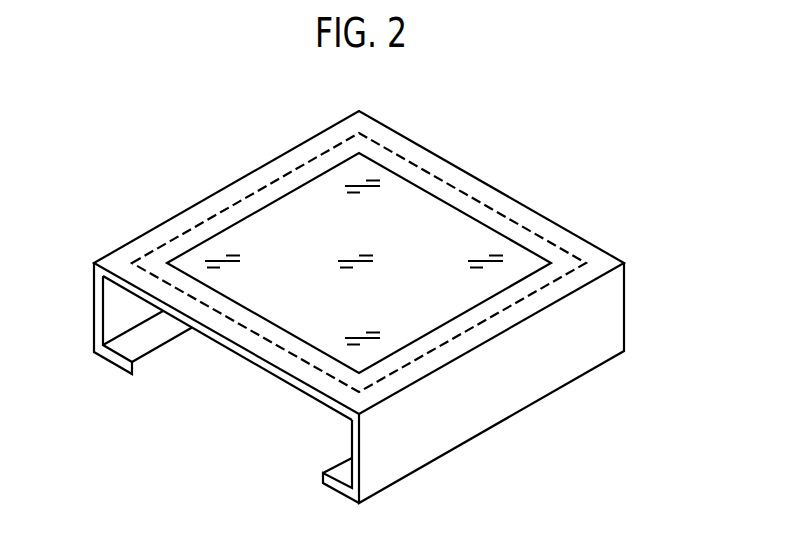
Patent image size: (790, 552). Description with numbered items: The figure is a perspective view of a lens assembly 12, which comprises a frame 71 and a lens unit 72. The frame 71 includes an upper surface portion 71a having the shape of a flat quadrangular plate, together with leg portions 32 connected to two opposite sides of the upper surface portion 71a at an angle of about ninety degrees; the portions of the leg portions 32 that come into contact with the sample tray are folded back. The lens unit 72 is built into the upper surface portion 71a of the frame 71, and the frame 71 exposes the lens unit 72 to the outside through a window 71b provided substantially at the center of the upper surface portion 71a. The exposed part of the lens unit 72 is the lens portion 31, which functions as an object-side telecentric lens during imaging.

The lens assembly 12 is at (158, 184).
The lens portion 31 is at (316, 193).
The leg portions 32 is at (96, 309).
The frame 71 is at (626, 282).
The upper surface portion 71a is at (560, 237).
The window 71b is at (434, 193).
The lens unit 72 is at (508, 217).